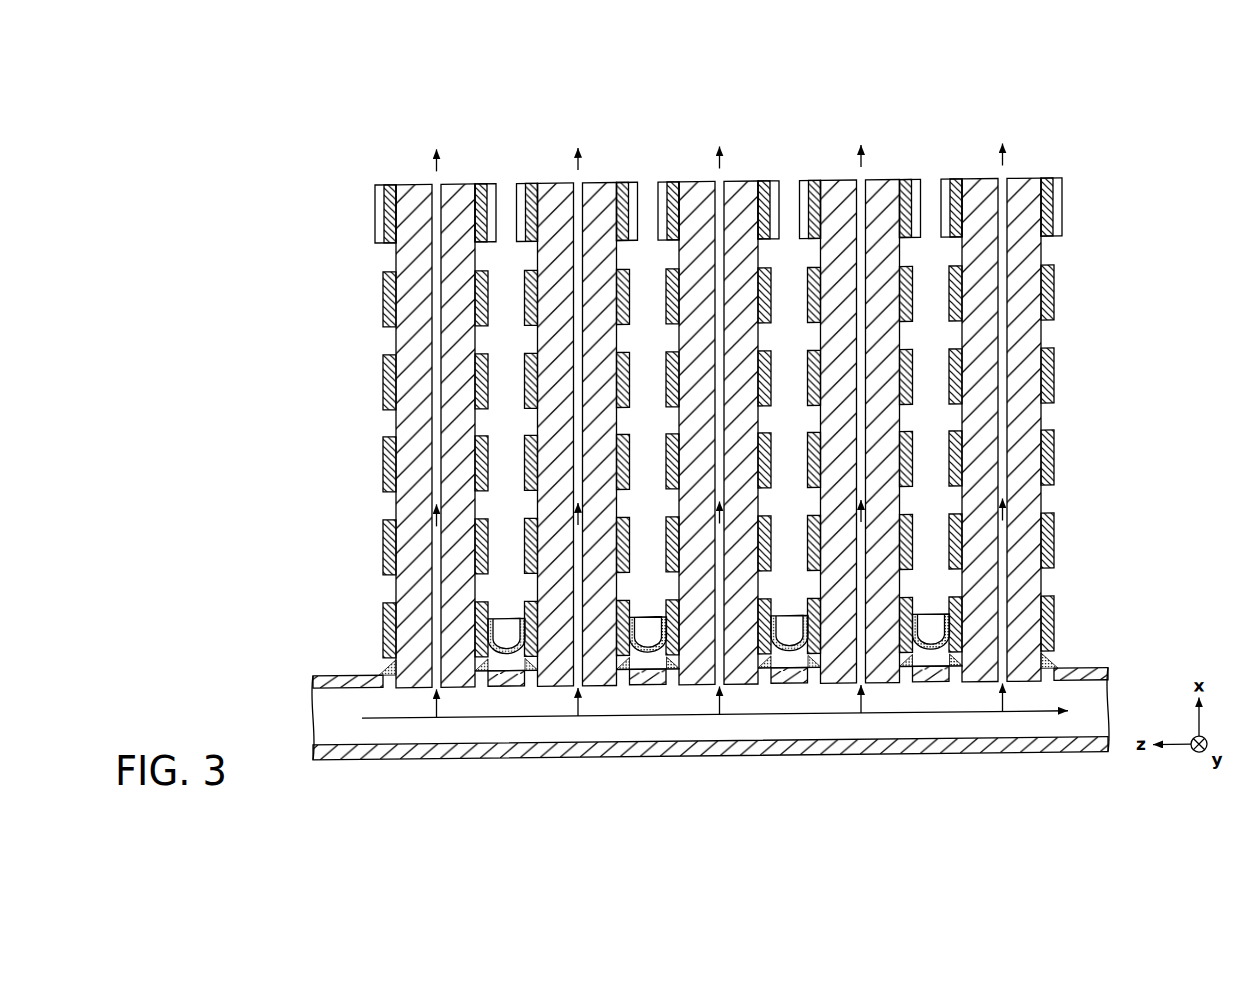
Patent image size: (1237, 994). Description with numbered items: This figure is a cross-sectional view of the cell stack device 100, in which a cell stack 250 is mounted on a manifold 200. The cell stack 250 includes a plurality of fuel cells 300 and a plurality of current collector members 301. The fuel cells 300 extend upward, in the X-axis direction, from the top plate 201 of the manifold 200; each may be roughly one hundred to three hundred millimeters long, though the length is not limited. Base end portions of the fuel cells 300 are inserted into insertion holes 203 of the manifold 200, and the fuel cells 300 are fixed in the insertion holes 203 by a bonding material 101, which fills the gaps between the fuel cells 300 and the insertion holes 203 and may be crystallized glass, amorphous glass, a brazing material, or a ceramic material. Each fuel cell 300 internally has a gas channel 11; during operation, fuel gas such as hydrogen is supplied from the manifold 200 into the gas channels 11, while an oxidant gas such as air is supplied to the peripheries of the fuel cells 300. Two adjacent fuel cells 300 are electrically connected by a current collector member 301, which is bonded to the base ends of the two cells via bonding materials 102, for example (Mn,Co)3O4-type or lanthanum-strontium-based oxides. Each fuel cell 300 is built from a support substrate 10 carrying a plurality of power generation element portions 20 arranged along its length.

The cell stack device 100 is at (1043, 115).
The cell stack 250 is at (1089, 201).
The fuel cell 300 is at (407, 170).
The support substrate 10 is at (396, 253).
The gas channel 11 is at (432, 348).
The power generation element portion 20 is at (383, 298).
The current collector member 301 is at (491, 619).
The bonding material 102 is at (508, 660).
The bonding material 101 is at (530, 662).
The insertion hole 203 is at (390, 668).
The top plate 201 is at (1097, 676).
The manifold 200 is at (1035, 765).